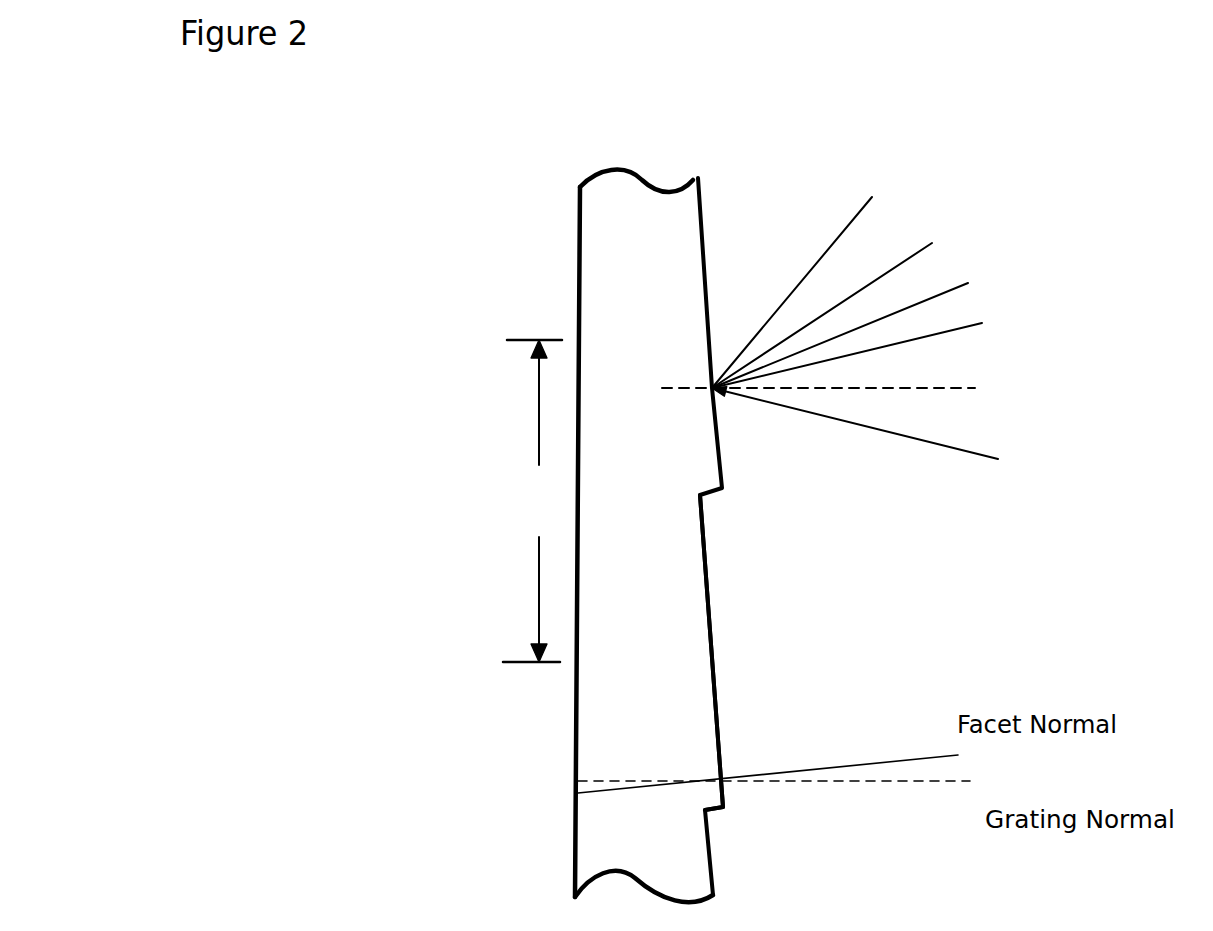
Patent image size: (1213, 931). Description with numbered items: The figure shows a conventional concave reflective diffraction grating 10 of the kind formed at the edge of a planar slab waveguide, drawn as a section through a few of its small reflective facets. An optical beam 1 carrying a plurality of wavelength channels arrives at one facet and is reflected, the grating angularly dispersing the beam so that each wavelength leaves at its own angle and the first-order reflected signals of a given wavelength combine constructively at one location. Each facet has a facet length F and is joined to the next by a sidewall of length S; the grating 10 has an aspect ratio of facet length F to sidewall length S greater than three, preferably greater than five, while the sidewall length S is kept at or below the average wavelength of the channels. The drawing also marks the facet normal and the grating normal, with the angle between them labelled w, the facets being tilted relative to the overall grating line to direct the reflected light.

The concave reflective diffraction grating 10 is at (600, 237).
The optical beam 1 is at (943, 447).
The facet length F is at (711, 597).
The sidewall length S is at (713, 812).
The facet angle between facet normal and grating normal w is at (787, 774).